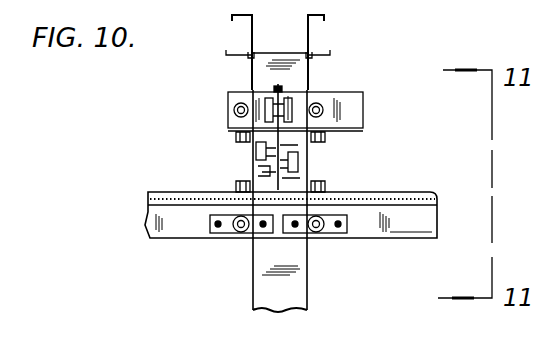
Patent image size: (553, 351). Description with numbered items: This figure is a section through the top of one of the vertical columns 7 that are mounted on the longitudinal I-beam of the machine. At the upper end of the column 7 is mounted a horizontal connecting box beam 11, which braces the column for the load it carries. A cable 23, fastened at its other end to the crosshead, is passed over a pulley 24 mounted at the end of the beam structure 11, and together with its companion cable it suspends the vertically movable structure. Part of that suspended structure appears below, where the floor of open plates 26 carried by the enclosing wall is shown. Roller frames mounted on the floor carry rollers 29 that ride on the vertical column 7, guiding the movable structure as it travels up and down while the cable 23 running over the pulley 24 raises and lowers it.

The vertical column 7 is at (293, 288).
The horizontal connecting box beam 11 is at (313, 31).
The cable 23 is at (252, 86).
The pulley 24 is at (283, 86).
The open plate 26 is at (378, 194).
The roller 29 is at (256, 148).